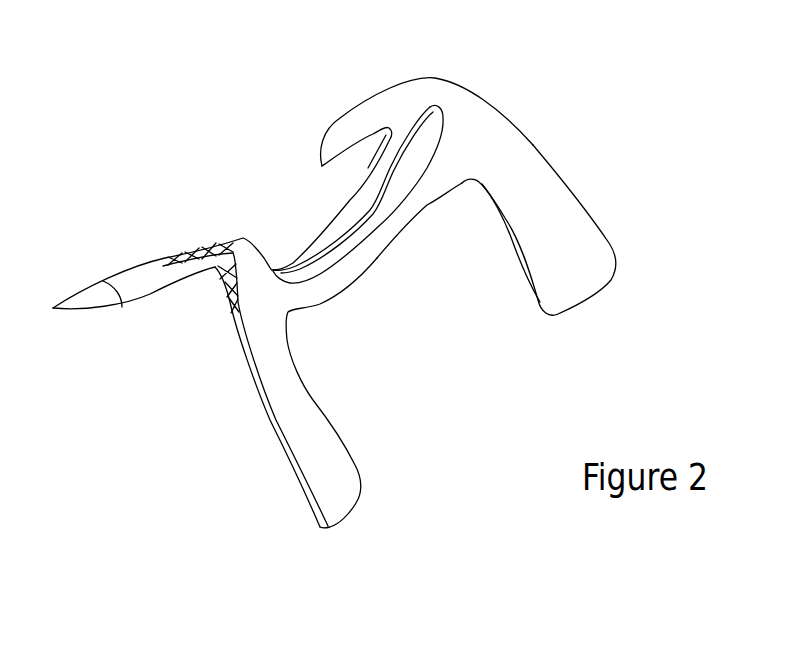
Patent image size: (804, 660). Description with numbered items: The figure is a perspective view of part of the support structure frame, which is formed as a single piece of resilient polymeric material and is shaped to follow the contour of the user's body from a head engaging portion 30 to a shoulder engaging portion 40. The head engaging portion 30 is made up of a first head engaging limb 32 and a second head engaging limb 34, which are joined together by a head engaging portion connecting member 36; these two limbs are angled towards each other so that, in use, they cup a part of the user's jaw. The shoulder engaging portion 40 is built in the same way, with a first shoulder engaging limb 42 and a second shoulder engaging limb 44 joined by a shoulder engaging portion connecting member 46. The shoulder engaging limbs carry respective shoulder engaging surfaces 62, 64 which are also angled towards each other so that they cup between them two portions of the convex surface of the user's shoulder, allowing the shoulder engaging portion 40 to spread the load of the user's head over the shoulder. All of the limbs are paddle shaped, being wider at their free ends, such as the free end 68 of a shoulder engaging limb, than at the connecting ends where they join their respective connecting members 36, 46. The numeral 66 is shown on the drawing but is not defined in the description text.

The head engaging portion 30 is at (263, 212).
The first head engaging limb 32 is at (363, 99).
The second head engaging limb 34 is at (123, 310).
The head engaging portion connecting member 36 is at (375, 180).
The shoulder engaging portion 40 is at (617, 267).
The first shoulder engaging limb 42 is at (578, 225).
The second shoulder engaging limb 44 is at (300, 457).
The shoulder engaging portion connecting member 46 is at (428, 202).
The shoulder engaging surface 62 is at (575, 269).
The shoulder engaging surface 64 is at (342, 478).
The first pad edge 66 is at (582, 305).
The free end 68 is at (347, 495).